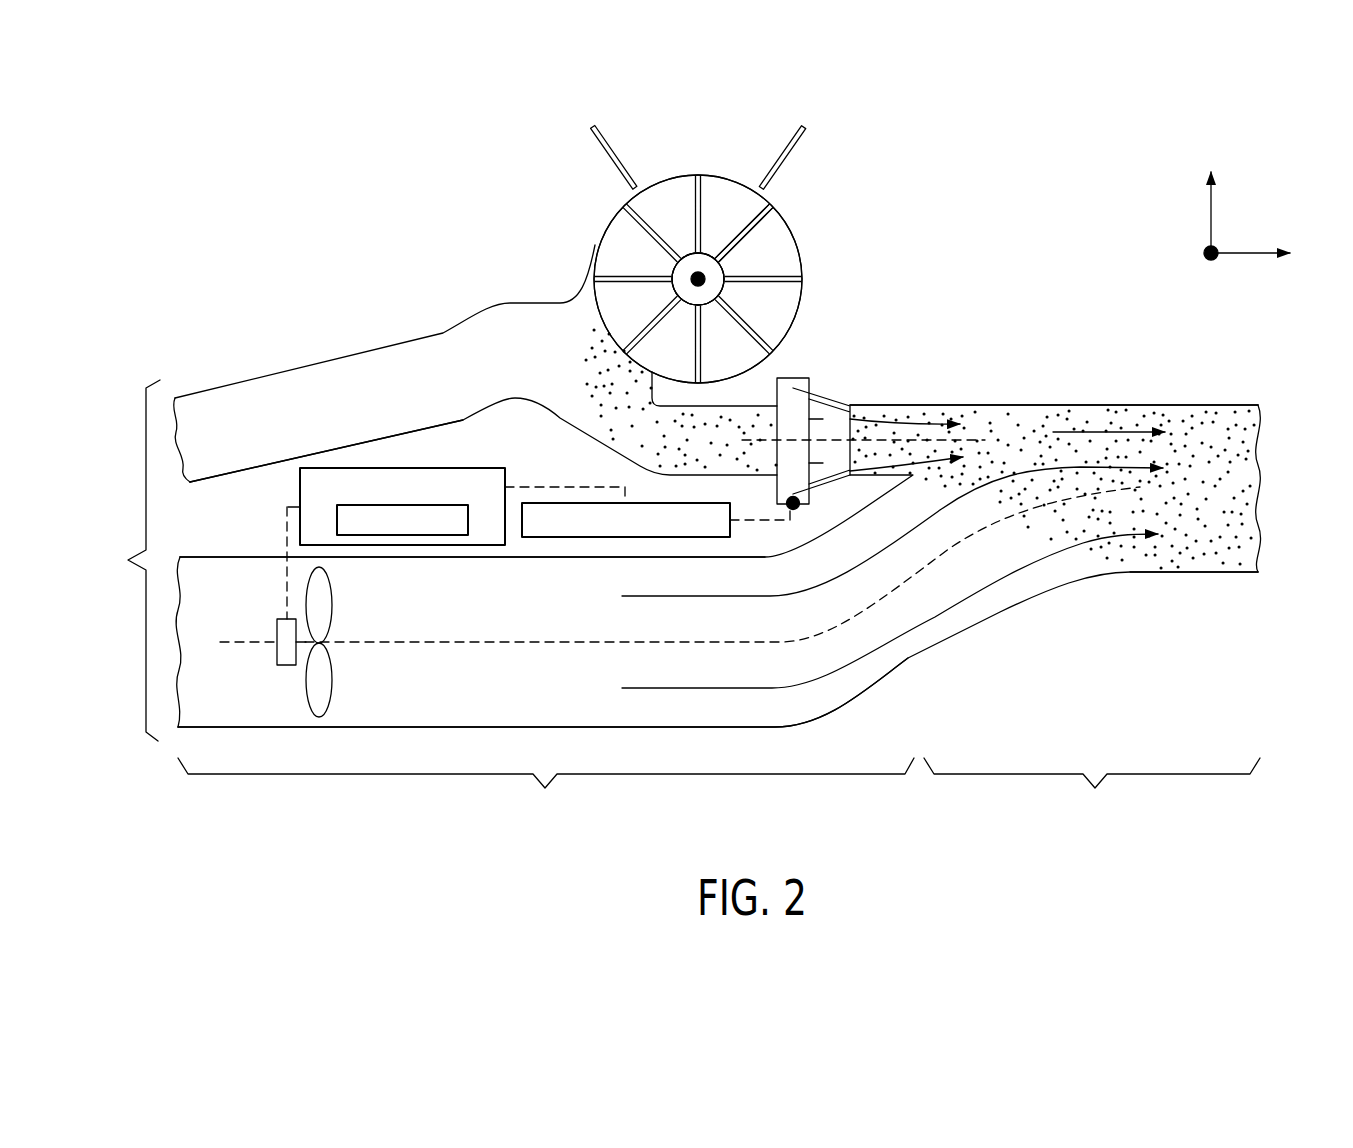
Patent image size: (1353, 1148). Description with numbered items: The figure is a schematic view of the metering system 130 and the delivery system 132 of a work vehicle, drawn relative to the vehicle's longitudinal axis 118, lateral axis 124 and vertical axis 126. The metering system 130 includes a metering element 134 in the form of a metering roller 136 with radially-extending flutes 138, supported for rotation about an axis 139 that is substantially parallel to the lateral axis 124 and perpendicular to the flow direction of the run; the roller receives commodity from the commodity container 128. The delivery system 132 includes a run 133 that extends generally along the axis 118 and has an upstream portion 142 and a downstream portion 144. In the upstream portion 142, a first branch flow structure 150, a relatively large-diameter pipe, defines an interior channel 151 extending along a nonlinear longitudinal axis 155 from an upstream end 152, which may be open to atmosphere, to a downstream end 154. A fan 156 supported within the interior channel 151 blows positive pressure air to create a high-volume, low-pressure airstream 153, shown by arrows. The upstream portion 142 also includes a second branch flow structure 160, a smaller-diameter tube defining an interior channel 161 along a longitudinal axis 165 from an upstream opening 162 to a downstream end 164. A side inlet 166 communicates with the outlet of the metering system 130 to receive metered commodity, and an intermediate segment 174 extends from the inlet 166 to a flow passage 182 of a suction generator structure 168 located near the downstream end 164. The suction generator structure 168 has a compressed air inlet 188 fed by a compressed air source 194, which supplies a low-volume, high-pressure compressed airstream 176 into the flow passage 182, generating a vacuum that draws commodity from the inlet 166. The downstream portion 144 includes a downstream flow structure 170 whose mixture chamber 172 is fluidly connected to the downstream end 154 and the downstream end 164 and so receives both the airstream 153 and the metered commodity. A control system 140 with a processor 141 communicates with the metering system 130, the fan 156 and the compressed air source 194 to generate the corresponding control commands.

The longitudinal axis 118 is at (1238, 255).
The lateral axis 124 is at (1211, 262).
The vertical axis 126 is at (1210, 225).
The commodity container 128 is at (716, 141).
The metering system 130 is at (588, 232).
The delivery system 132 is at (451, 363).
The run 133 is at (122, 560).
The metering element 134 is at (728, 265).
The metering roller 136 is at (716, 286).
The radially-extending flutes 138 is at (742, 232).
The axis 139 is at (697, 277).
The control system 140 is at (403, 468).
The processor 141 is at (403, 535).
The upstream portion 142 is at (546, 790).
The downstream portion 144 is at (1092, 790).
The first branch flow structure 150 is at (245, 553).
The interior channel 151 is at (535, 613).
The upstream end 152 is at (234, 710).
The airstream 153 is at (933, 508).
The downstream end 154 is at (908, 658).
The longitudinal axis 155 is at (430, 652).
The fan 156 is at (320, 688).
The second branch flow structure 160 is at (287, 372).
The interior channel 161 is at (443, 392).
The upstream opening 162 is at (240, 348).
The downstream end 164 is at (893, 416).
The longitudinal axis 165 is at (755, 433).
The side inlet 166 is at (617, 360).
The suction generator structure 168 is at (826, 383).
The downstream flow structure 170 is at (1140, 403).
The mixture chamber 172 is at (1002, 442).
The intermediate segment 174 is at (732, 405).
The compressed airstream 176 is at (920, 423).
The flow passage 182 is at (805, 446).
The compressed air inlet 188 is at (793, 510).
The compressed air source 194 is at (607, 537).